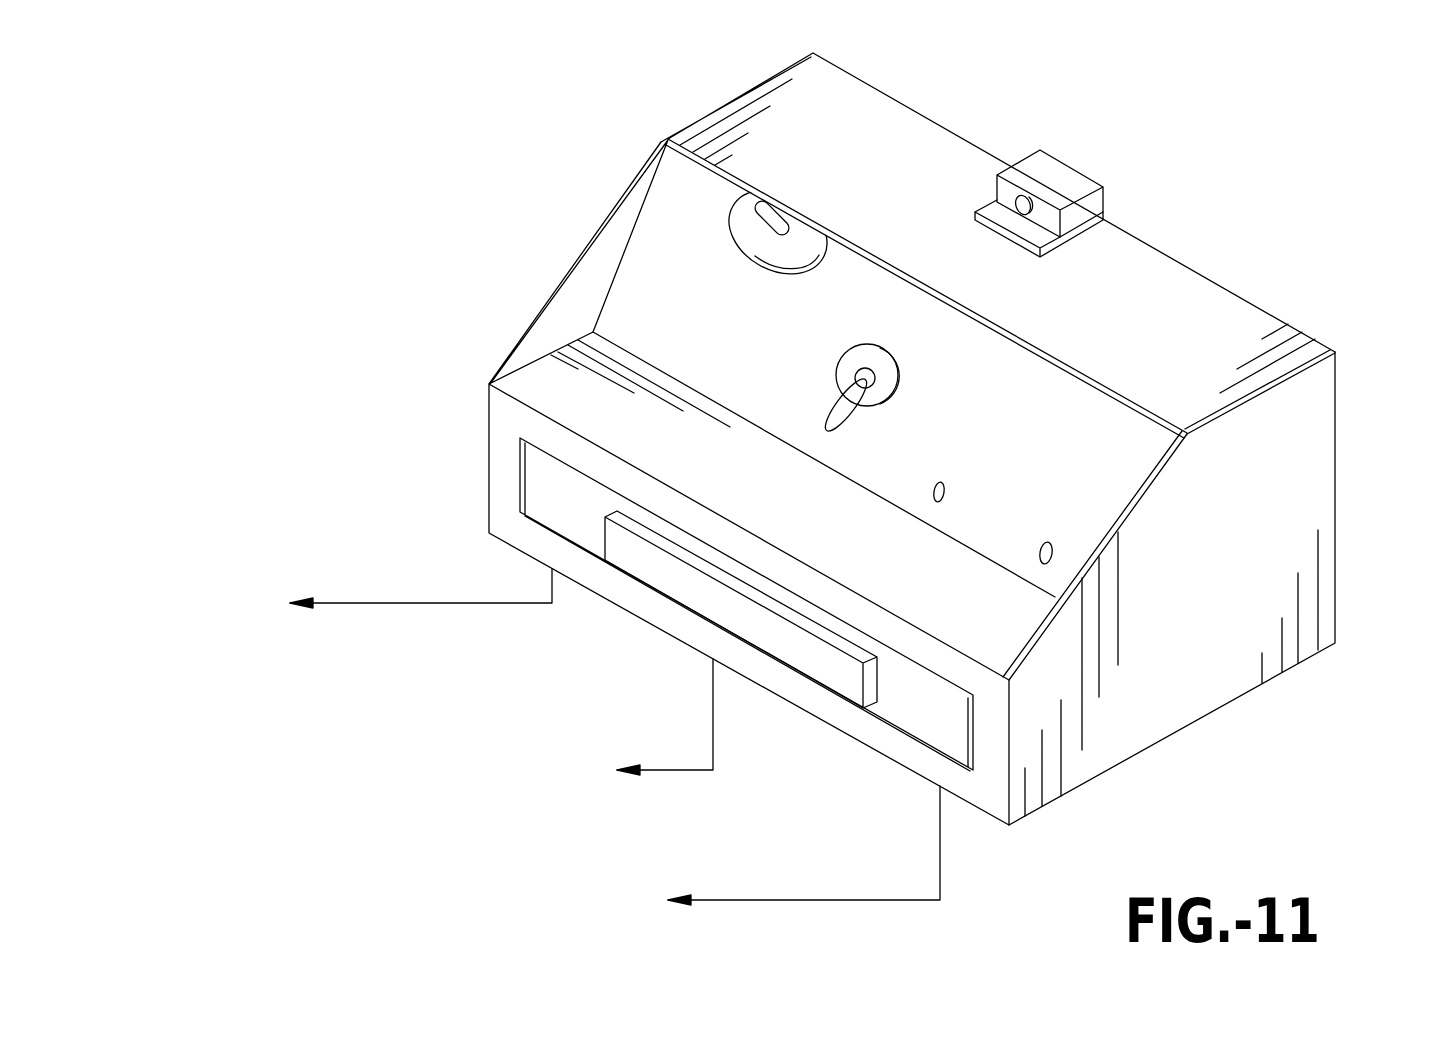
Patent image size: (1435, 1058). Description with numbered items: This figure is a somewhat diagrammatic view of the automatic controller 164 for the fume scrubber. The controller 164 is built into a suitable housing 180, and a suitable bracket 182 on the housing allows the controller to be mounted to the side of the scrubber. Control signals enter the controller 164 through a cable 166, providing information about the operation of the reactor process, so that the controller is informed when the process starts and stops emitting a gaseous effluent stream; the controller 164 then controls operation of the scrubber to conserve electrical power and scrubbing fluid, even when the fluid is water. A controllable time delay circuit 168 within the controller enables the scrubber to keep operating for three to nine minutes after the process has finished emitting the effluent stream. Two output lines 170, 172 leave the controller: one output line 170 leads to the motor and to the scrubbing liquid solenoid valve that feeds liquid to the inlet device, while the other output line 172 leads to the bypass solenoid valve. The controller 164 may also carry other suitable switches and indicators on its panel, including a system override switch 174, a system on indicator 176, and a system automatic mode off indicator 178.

The automatic controller 164 is at (806, 755).
The cable 166 is at (940, 856).
The controllable time delay circuit 168 is at (750, 257).
The output line 170 is at (490, 604).
The output line 172 is at (713, 728).
The system override switch 174 is at (880, 358).
The system on indicator 176 is at (941, 482).
The system automatic mode off indicator 178 is at (1048, 542).
The housing 180 is at (1302, 498).
The bracket 182 is at (1085, 210).